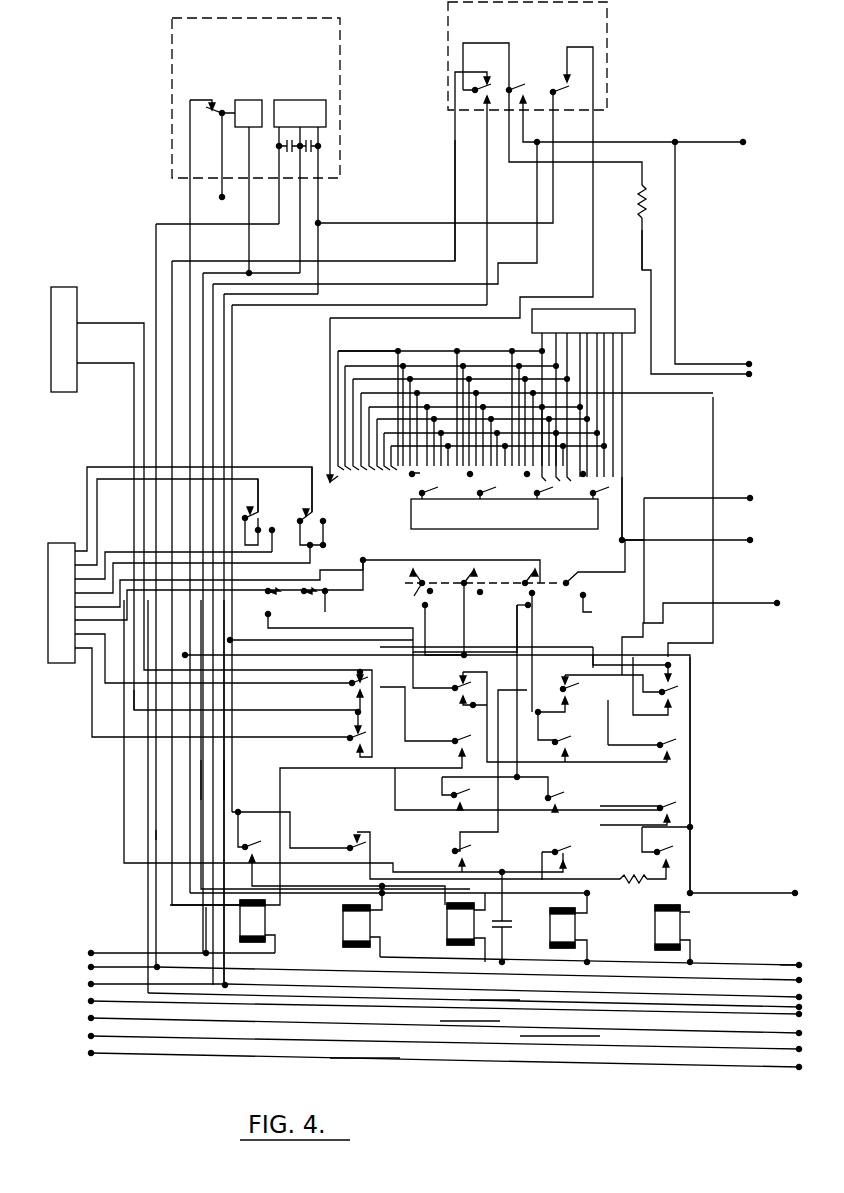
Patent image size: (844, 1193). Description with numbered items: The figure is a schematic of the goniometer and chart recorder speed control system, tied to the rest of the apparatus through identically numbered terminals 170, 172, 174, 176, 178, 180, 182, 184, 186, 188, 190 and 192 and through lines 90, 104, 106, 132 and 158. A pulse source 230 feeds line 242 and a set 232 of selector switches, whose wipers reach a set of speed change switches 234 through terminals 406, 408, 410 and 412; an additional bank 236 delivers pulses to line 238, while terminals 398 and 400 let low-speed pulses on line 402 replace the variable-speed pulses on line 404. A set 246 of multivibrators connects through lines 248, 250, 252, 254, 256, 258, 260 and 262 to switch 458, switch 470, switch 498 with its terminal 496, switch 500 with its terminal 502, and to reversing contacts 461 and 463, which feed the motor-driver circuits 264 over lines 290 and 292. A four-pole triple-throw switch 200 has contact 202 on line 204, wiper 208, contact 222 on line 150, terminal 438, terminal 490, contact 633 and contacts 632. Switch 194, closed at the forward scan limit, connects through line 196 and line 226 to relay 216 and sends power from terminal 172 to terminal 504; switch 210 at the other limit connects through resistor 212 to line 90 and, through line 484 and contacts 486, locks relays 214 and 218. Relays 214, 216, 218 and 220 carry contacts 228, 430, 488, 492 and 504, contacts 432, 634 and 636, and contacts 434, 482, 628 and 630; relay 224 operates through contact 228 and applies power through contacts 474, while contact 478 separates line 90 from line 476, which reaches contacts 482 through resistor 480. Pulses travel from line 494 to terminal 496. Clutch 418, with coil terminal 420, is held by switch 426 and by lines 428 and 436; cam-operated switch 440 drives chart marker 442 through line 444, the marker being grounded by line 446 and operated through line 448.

The switch 426 is at (210, 98).
The clutch 418 is at (250, 100).
The recorder chart marker 442 is at (300, 100).
The terminal 420 is at (222, 197).
The line 428 is at (190, 200).
The line 448 is at (156, 246).
The line 446 is at (300, 242).
The line 444 is at (400, 223).
The line 226 is at (372, 268).
The switch 210 is at (478, 74).
The switch 194 is at (510, 84).
The switch 440 is at (561, 110).
The terminal 504 is at (743, 142).
The resistor 212 is at (642, 205).
The line 90 is at (642, 255).
The line 196 is at (676, 250).
The terminal 170 is at (749, 364).
The terminal 172 is at (749, 374).
The line 484 is at (455, 156).
The motor-driver circuits 264 is at (56, 344).
The line 290 is at (103, 323).
The line 292 is at (99, 363).
The set of selector switches 232 is at (282, 412).
The line 242 is at (432, 351).
The pulse source 230 is at (532, 322).
The line 494 is at (713, 417).
The line 402 is at (626, 488).
The terminal 398 is at (750, 498).
The terminal 400 is at (750, 540).
The set of speed change switches 234 is at (524, 530).
The terminal 412 is at (424, 494).
The terminal 410 is at (482, 494).
The terminal 408 is at (539, 494).
The terminal 406 is at (600, 490).
The bank 236 is at (334, 484).
The switch 458 is at (318, 518).
The line 238 is at (365, 530).
The switch 470 is at (258, 518).
The contacts 636 is at (272, 518).
The line 254 is at (312, 557).
The line 256 is at (316, 580).
The line 248 is at (87, 516).
The line 250 is at (97, 524).
The line 252 is at (112, 550).
The switch 500 is at (270, 604).
The switch 498 is at (304, 598).
The terminal 496 is at (322, 598).
The terminal 502 is at (268, 616).
The line 436 is at (322, 628).
The line 258 is at (104, 625).
The set of multivibrators 246 is at (52, 636).
The line 262 is at (92, 676).
The line 260 is at (118, 680).
The reversing contacts 461 is at (345, 690).
The reversing contacts 463 is at (346, 734).
The contact 202 is at (424, 576).
The wiper 208 is at (418, 596).
The contact 222 is at (426, 612).
The terminal 438 is at (472, 598).
The four-pole triple-throw switch 200 is at (572, 560).
The terminal 490 is at (530, 608).
The contact 633 is at (580, 582).
The contacts 632 is at (590, 598).
The line 404 is at (645, 580).
The line 204 is at (678, 600).
The terminal 174 is at (777, 603).
The contact 488 is at (458, 676).
The contact 228 is at (452, 744).
The contacts 430 is at (456, 806).
The contact 492 is at (446, 846).
The line 476 is at (393, 875).
The contacts 634 is at (566, 684).
The contacts 432 is at (556, 806).
The contacts 486 is at (558, 850).
The contacts 630 is at (680, 690).
The contacts 628 is at (680, 752).
The line 150 is at (690, 778).
The contacts 434 is at (680, 812).
The contacts 482 is at (660, 850).
The resistor 480 is at (626, 879).
The terminal 176 is at (795, 893).
The contacts 474 is at (248, 846).
The contact 478 is at (352, 846).
The relay 224 is at (265, 916).
The relay 214 is at (343, 932).
The relay 216 is at (447, 932).
The relay 218 is at (556, 930).
The relay 220 is at (655, 916).
The line 104 is at (618, 962).
The terminal 178 is at (799, 965).
The terminal 180 is at (799, 980).
The terminal 182 is at (799, 997).
The terminal 184 is at (790, 1008).
The terminal 186 is at (799, 1014).
The terminal 188 is at (799, 1033).
The terminal 190 is at (799, 1049).
The terminal 192 is at (799, 1067).
The lead 106 is at (480, 1014).
The lead 132 is at (556, 1036).
The lead 158 is at (376, 1062).